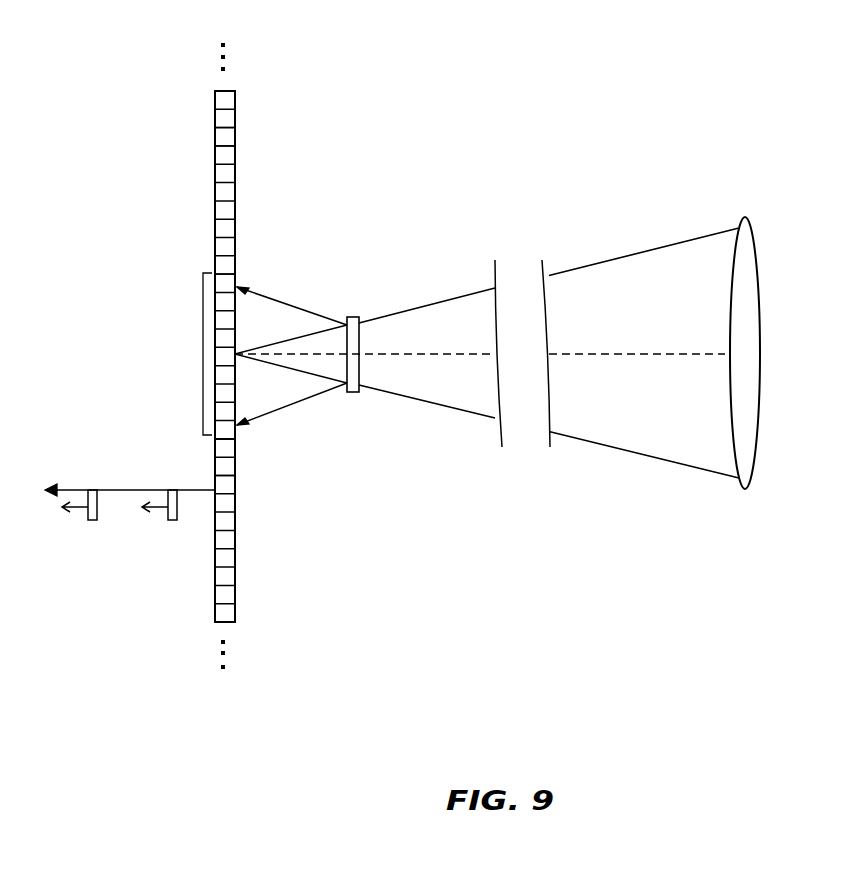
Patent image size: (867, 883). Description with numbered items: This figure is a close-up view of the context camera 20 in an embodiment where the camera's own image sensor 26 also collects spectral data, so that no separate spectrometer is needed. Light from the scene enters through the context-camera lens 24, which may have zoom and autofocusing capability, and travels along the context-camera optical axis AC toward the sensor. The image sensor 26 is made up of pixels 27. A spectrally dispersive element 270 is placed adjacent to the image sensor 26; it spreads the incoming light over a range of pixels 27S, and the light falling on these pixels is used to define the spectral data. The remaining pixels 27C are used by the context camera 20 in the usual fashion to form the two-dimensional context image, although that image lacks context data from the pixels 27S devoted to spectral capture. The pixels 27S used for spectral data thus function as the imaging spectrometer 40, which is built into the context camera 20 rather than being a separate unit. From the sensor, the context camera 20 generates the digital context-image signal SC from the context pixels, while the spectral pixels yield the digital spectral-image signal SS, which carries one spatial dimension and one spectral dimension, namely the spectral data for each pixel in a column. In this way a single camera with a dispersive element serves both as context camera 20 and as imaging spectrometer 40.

The context camera 20 is at (637, 72).
The context-camera lens 24 is at (747, 216).
The image sensor 26 is at (170, 95).
The remaining pixels 27C is at (222, 138).
The range of pixels 27S is at (203, 356).
The pixels 27 is at (198, 457).
The imaging spectrometer 40 is at (295, 282).
The spectrally dispersive element 270 is at (353, 392).
The context-camera optical axis AC is at (627, 355).
The digital context-image signal SC is at (88, 520).
The digital spectral-image signal SS is at (168, 520).